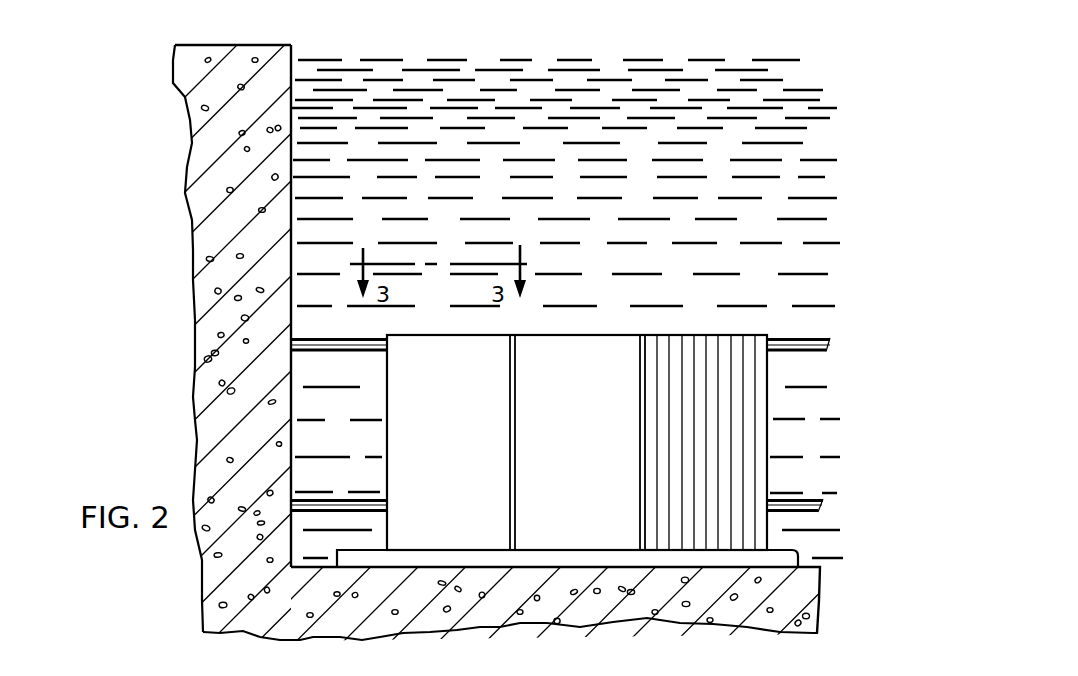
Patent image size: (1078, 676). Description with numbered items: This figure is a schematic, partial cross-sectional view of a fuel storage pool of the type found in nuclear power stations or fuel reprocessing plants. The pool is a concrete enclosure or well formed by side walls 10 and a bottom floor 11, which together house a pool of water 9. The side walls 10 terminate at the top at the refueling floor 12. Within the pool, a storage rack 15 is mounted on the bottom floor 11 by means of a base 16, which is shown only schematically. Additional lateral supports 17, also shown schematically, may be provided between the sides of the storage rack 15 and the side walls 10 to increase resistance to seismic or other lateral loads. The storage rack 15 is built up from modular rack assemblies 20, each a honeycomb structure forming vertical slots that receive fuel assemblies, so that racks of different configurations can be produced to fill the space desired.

The pool of water 9 is at (493, 59).
The side walls 10 is at (207, 402).
The bottom floor 11 is at (610, 597).
The refueling floor 12 is at (200, 45).
The storage rack 15 is at (580, 300).
The base 16 is at (488, 557).
The lateral supports 17 is at (340, 487).
The rack assemblies 20 is at (695, 334).